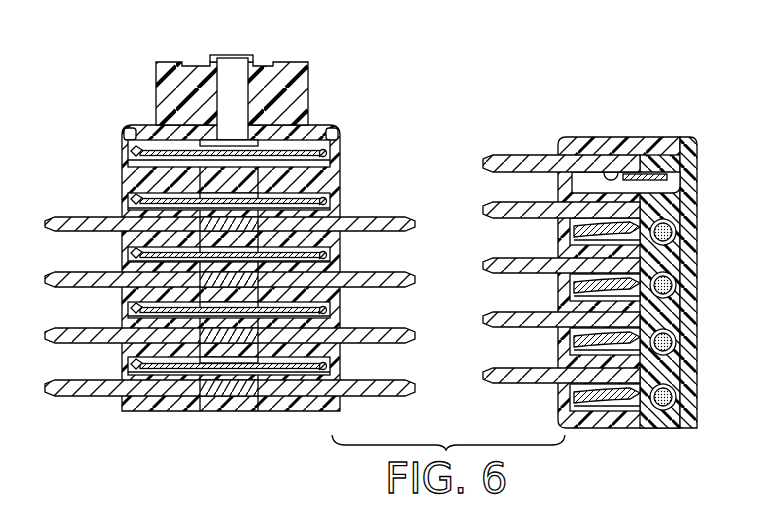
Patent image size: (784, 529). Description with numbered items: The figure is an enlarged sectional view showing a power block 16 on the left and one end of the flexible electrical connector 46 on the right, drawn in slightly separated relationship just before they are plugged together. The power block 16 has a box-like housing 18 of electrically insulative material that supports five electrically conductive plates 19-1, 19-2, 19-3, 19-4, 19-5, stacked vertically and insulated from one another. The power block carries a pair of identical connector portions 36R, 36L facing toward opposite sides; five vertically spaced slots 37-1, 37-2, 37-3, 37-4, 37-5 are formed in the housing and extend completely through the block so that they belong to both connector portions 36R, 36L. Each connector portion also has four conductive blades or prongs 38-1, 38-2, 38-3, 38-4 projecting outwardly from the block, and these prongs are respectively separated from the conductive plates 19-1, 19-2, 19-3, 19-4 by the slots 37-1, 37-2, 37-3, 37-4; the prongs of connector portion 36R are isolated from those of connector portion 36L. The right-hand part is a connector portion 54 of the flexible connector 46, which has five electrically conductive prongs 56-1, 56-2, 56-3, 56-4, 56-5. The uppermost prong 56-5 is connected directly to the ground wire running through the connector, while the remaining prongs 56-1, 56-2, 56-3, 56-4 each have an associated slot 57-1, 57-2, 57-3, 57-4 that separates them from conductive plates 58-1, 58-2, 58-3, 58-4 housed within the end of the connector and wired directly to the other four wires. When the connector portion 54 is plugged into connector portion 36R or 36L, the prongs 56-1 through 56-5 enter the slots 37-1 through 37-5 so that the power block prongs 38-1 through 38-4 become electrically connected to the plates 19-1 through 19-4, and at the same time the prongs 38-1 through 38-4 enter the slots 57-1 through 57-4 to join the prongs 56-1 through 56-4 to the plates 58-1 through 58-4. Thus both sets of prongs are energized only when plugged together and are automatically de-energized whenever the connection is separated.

The power block 16 is at (181, 420).
The box-like housing 18 is at (314, 129).
The conductive plate 19-1 is at (130, 372).
The conductive plate 19-2 is at (130, 316).
The conductive plate 19-3 is at (130, 260).
The conductive plate 19-4 is at (130, 207).
The conductive plate 19-5 is at (130, 160).
The connector portion 36L is at (110, 93).
The connector portion 36R is at (358, 110).
The slot 37-1 is at (327, 373).
The slot 37-2 is at (327, 317).
The slot 37-3 is at (327, 262).
The slot 37-4 is at (327, 208).
The slot 37-5 is at (327, 163).
The conductive prong 38-1 is at (400, 397).
The conductive prong 38-2 is at (400, 344).
The conductive prong 38-3 is at (400, 288).
The conductive prong 38-4 is at (400, 232).
The connector portion 54 is at (594, 127).
The flexible electrical connector 46 is at (702, 167).
The conductive prong 56-1 is at (492, 385).
The conductive prong 56-2 is at (492, 329).
The conductive prong 56-3 is at (492, 275).
The conductive prong 56-4 is at (492, 220).
The conductive prong 56-5 is at (492, 174).
The slot 57-1 is at (628, 392).
The slot 57-2 is at (628, 336).
The slot 57-3 is at (628, 282).
The slot 57-4 is at (628, 226).
The conductive plate 58-1 is at (672, 409).
The conductive plate 58-2 is at (672, 352).
The conductive plate 58-3 is at (672, 295).
The conductive plate 58-4 is at (672, 241).